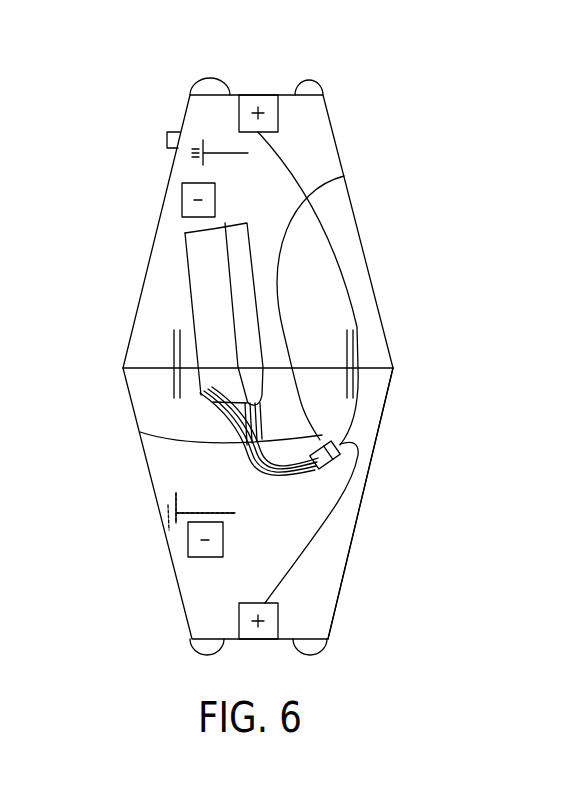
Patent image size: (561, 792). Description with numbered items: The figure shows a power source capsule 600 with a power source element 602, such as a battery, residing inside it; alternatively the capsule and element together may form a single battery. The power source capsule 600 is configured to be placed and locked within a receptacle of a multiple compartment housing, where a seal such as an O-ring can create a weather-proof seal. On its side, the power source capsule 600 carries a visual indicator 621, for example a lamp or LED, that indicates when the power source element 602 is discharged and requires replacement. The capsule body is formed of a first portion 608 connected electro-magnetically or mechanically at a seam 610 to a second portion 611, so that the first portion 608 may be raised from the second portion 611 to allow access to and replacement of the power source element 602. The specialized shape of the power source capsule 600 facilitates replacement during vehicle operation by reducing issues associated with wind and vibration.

The power source capsule 600 is at (154, 77).
The power source element 602 is at (185, 233).
The first portion 608 is at (352, 200).
The seam 610 is at (398, 367).
The second portion 611 is at (347, 562).
The visual indicator 621 is at (167, 142).